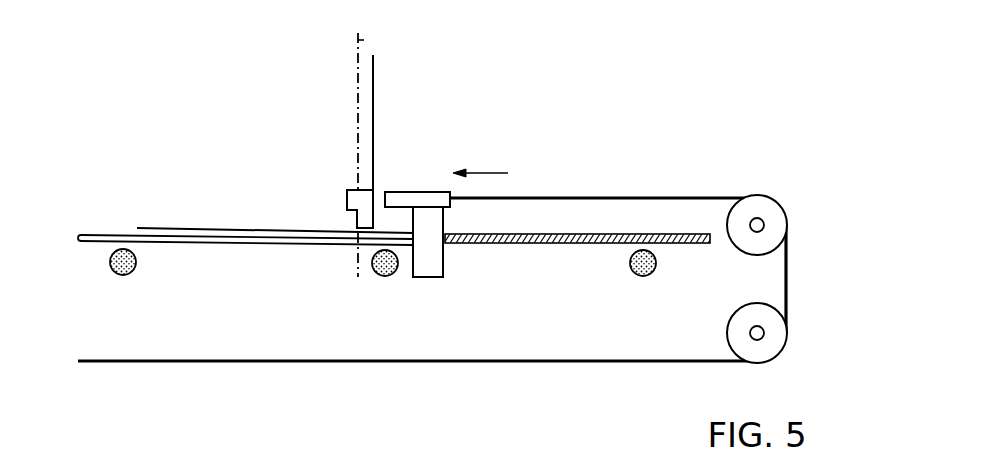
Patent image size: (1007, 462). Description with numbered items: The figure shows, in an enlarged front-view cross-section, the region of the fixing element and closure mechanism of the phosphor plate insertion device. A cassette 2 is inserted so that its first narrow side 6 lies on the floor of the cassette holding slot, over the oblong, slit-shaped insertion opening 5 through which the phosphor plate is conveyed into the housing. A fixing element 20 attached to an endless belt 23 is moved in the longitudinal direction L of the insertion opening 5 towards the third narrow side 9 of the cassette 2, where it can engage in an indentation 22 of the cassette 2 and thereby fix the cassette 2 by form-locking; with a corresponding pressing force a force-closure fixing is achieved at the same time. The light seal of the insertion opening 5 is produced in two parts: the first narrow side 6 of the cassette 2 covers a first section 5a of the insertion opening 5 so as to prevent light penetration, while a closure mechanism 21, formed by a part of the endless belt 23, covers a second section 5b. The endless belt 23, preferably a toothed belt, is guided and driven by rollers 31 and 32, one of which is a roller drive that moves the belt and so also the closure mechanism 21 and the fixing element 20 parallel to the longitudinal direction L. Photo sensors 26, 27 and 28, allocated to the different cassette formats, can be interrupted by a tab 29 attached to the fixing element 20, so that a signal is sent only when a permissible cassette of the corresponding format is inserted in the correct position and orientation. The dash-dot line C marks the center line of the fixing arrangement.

The cassette 2 is at (133, 127).
The insertion opening 5 is at (368, 254).
The first section of the insertion opening 5a is at (232, 245).
The second section of the insertion opening 5b is at (555, 243).
The first narrow side 6 is at (183, 220).
The third narrow side 9 is at (381, 88).
The cutting line axis C is at (364, 40).
The fixing element 20 is at (407, 192).
The closure mechanism 21 is at (600, 197).
The indentation 22 is at (346, 196).
The endless belt 23 is at (467, 362).
The photo sensor 26 is at (122, 275).
The photo sensor 27 is at (388, 276).
The photo sensor 28 is at (641, 276).
The tab 29 is at (445, 268).
The roller 31 is at (783, 213).
The roller 32 is at (783, 333).
The longitudinal direction L is at (490, 173).